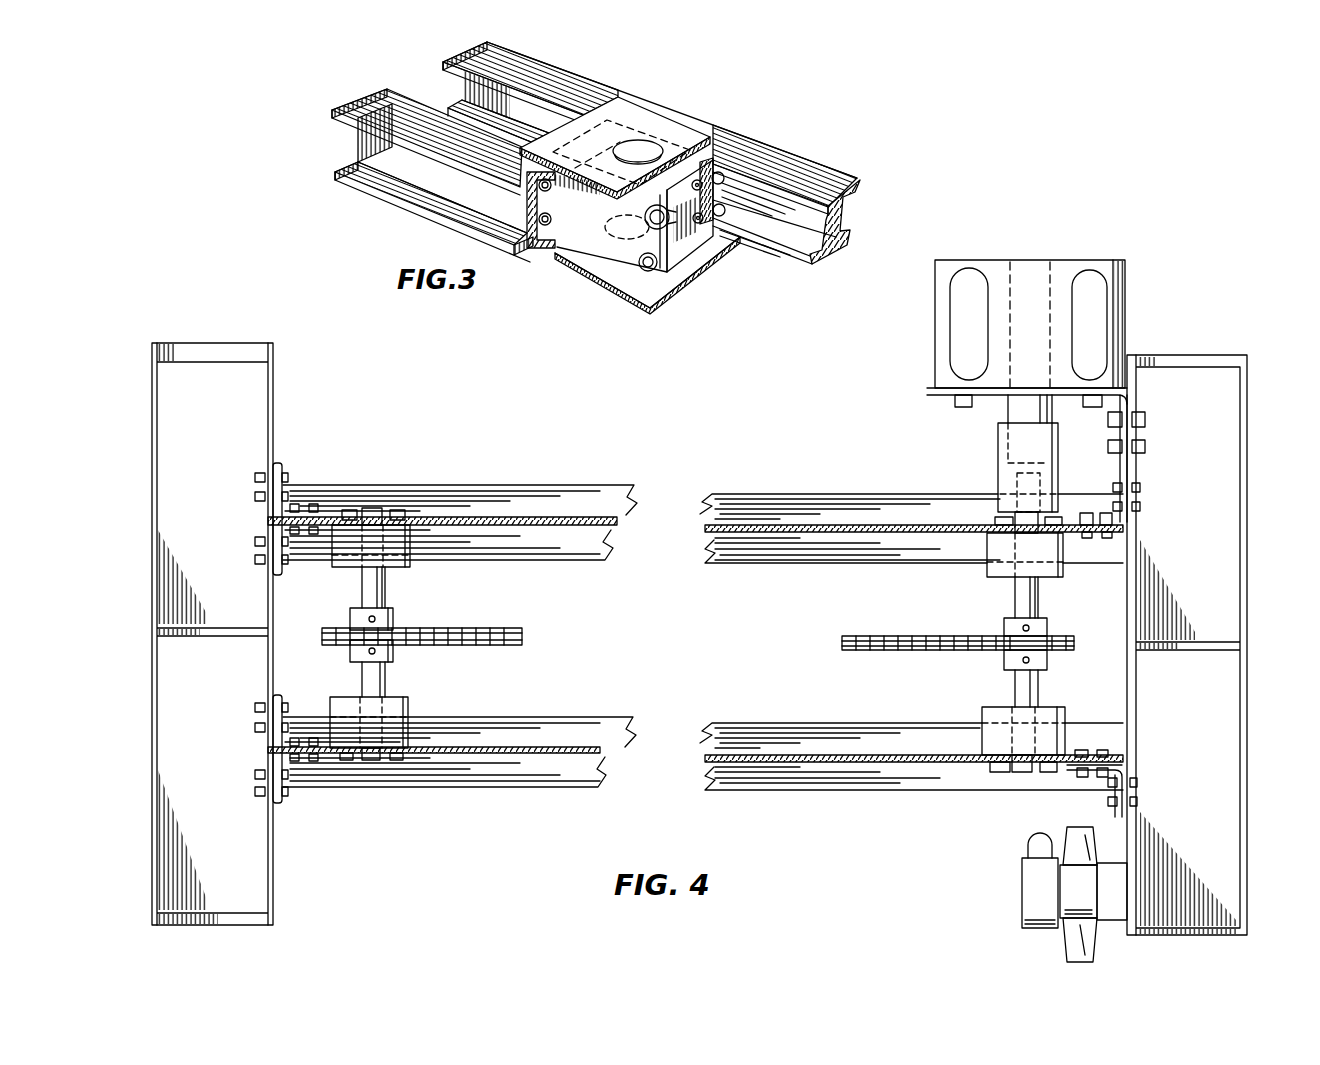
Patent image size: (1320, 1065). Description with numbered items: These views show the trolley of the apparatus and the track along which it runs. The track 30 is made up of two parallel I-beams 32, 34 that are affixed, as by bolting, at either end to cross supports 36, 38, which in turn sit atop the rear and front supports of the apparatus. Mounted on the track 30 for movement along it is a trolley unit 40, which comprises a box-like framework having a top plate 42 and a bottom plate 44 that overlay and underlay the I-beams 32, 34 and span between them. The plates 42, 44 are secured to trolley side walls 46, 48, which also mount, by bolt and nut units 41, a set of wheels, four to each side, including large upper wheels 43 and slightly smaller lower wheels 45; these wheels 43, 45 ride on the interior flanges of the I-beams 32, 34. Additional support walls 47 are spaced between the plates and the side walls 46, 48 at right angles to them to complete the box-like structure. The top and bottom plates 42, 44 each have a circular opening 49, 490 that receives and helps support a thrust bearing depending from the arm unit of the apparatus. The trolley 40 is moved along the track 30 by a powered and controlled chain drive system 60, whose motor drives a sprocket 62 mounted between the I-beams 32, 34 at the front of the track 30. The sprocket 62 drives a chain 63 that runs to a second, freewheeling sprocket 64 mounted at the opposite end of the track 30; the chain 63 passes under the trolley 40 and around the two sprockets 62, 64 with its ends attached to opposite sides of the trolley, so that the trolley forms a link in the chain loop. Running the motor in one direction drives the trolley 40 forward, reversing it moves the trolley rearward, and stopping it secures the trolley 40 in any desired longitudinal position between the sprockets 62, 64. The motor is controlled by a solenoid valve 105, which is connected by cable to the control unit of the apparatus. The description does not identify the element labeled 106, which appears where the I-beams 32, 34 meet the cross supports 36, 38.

In FIG. 3, the track 30 is at (436, 65).
In FIG. 4, the track 30 is at (570, 568).
In FIG. 3, the I-beam 32 is at (392, 86).
In FIG. 4, the I-beam 32 is at (856, 518).
In FIG. 3, the I-beam 34 is at (470, 46).
In FIG. 4, the I-beam 34 is at (904, 752).
In FIG. 4, the cross support 36 is at (232, 408).
In FIG. 4, the cross support 38 is at (1212, 436).
In FIG. 3, the trolley unit 40 is at (713, 270).
In FIG. 3, the bolts and nut units 41 is at (722, 238).
In FIG. 3, the top plate 42 is at (688, 130).
In FIG. 3, the large upper wheels 43 is at (672, 240).
In FIG. 3, the bottom plate 44 is at (630, 300).
In FIG. 3, the lower wheels 45 is at (657, 268).
In FIG. 3, the trolley side wall 46 is at (580, 228).
In FIG. 3, the additional support walls 47 is at (573, 135).
In FIG. 3, the trolley side wall 48 is at (703, 157).
In FIG. 3, the circular opening 49 is at (636, 140).
In FIG. 3, the circular opening 490 is at (607, 274).
In FIG. 4, the chain drive system 60 is at (976, 618).
In FIG. 4, the sprocket 62 is at (1048, 634).
In FIG. 4, the chain 63 is at (520, 630).
In FIG. 4, the second sprocket 64 is at (392, 628).
In FIG. 4, the solenoid valve 105 is at (1020, 892).
In FIG. 4, the mounting brackets 106 is at (275, 529).